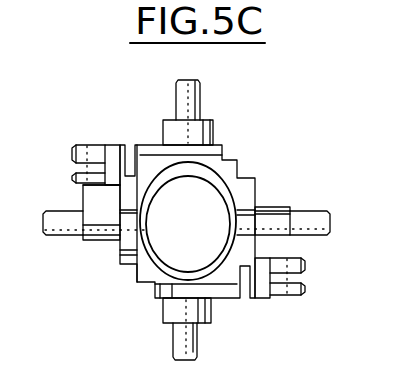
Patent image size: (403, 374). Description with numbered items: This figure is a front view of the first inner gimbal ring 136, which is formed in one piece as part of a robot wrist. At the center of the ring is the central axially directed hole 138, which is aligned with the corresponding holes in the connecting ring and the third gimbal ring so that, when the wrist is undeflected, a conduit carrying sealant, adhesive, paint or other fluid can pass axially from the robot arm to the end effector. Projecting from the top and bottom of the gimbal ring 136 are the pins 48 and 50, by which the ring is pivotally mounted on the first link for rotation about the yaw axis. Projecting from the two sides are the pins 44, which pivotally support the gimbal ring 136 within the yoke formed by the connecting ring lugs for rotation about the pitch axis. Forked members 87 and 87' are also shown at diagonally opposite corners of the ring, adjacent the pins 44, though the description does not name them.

The pins 44 is at (62, 237).
The pin 48 is at (200, 103).
The pin 50 is at (197, 351).
The clamp fork 87 is at (85, 143).
The clamp fork 87' is at (301, 288).
The first inner gimbal ring 136 is at (315, 145).
The central axially directed hole 138 is at (209, 185).